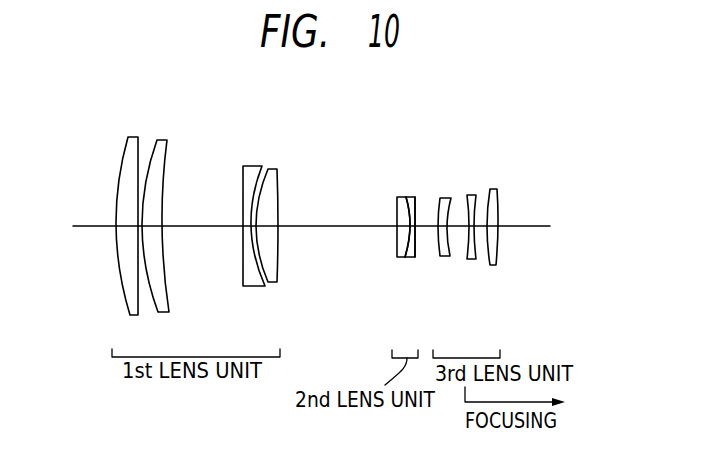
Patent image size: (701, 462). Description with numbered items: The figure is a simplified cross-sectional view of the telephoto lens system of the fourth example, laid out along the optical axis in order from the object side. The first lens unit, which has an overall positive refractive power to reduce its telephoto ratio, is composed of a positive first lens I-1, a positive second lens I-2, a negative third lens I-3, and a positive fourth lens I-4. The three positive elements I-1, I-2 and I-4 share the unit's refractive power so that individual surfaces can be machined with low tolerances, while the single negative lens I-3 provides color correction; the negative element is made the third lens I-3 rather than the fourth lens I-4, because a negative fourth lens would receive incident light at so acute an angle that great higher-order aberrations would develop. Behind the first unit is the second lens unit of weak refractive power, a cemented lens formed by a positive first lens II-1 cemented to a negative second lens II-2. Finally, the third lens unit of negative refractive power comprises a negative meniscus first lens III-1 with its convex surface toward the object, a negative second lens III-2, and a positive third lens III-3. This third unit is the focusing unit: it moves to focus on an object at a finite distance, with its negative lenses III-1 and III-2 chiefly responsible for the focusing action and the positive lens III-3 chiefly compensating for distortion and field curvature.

The first lens I-1 is at (134, 137).
The second lens I-2 is at (163, 139).
The third lens I-3 is at (253, 165).
The fourth lens I-4 is at (275, 167).
The first lens II-1 is at (397, 196).
The second lens II-2 is at (408, 196).
The negative meniscus first lens III-1 is at (446, 197).
The second lens III-2 is at (473, 194).
The third lens III-3 is at (495, 188).